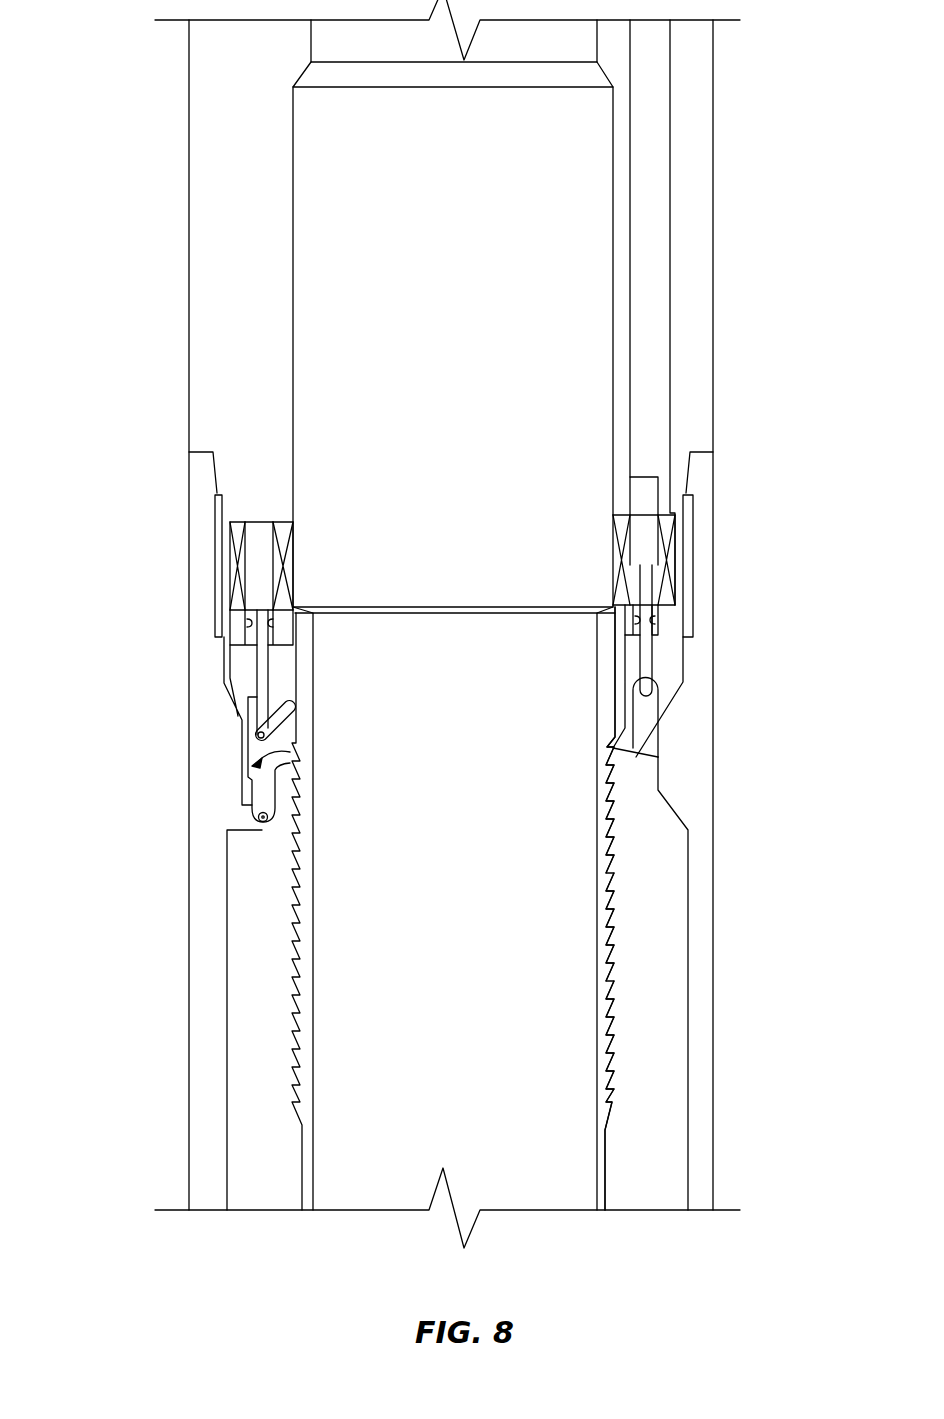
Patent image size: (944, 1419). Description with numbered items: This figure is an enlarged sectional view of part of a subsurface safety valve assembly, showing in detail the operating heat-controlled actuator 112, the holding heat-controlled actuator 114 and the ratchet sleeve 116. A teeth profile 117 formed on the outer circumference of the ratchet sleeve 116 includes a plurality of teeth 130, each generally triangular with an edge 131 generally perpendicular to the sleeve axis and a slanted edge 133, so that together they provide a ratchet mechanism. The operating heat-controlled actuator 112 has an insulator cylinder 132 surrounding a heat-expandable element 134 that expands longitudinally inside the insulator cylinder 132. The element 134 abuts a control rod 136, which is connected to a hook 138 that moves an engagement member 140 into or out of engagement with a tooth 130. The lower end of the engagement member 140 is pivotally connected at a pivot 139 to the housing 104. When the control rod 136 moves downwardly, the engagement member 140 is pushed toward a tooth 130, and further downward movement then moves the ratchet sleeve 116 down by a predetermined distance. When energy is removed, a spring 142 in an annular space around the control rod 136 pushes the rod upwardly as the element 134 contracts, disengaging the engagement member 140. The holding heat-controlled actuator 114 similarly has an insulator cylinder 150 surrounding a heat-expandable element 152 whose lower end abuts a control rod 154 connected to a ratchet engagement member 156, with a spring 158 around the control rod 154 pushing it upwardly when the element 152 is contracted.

The housing 104 is at (202, 905).
The operating heat-controlled actuator 112 is at (118, 538).
The holding heat-controlled actuator 114 is at (815, 478).
The ratchet sleeve 116 is at (607, 1178).
The teeth profile 117 is at (620, 910).
The tooth 130 is at (618, 880).
The edge 131 is at (618, 862).
The insulator cylinder 132 is at (285, 567).
The slanted edge 133 is at (620, 880).
The heat-expandable element 134 is at (263, 538).
The control rod 136 is at (263, 663).
The hook 138 is at (290, 715).
The pivot 139 is at (270, 822).
The engagement member 140 is at (283, 737).
The spring 142 is at (248, 635).
The insulator cylinder 150 is at (667, 563).
The heat-expandable element 152 is at (642, 518).
The control rod 154 is at (643, 663).
The ratchet engagement member 156 is at (650, 718).
The spring 158 is at (657, 615).